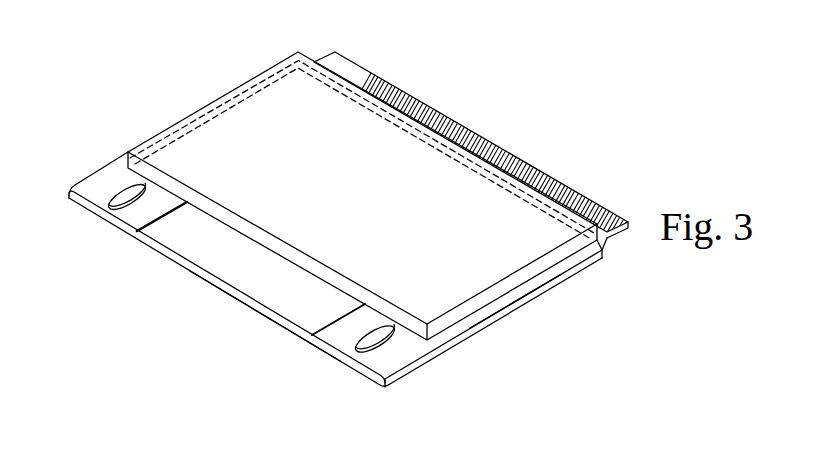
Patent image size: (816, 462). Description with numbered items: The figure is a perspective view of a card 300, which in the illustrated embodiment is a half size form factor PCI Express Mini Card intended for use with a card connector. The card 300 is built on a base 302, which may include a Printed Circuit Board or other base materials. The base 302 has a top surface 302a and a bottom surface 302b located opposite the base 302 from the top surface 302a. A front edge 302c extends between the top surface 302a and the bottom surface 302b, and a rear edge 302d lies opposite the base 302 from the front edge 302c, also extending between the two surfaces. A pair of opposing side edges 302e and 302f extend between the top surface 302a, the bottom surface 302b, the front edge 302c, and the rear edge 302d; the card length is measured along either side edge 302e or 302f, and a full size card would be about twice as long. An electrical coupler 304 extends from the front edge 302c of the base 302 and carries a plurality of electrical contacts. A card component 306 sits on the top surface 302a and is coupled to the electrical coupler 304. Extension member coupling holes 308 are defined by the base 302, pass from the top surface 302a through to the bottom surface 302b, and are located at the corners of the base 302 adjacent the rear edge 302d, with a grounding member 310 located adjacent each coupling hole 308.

The card 300 is at (223, 57).
The base 302 is at (508, 326).
The top surface 302a is at (213, 264).
The bottom surface 302b is at (309, 335).
The front edge 302c is at (313, 62).
The rear edge 302d is at (250, 304).
The side edge 302e is at (538, 300).
The side edge 302f is at (112, 162).
The electrical coupler 304 is at (418, 110).
The card component 306 is at (378, 198).
The extension member coupling hole 308 is at (110, 188).
The grounding member 310 is at (110, 208).